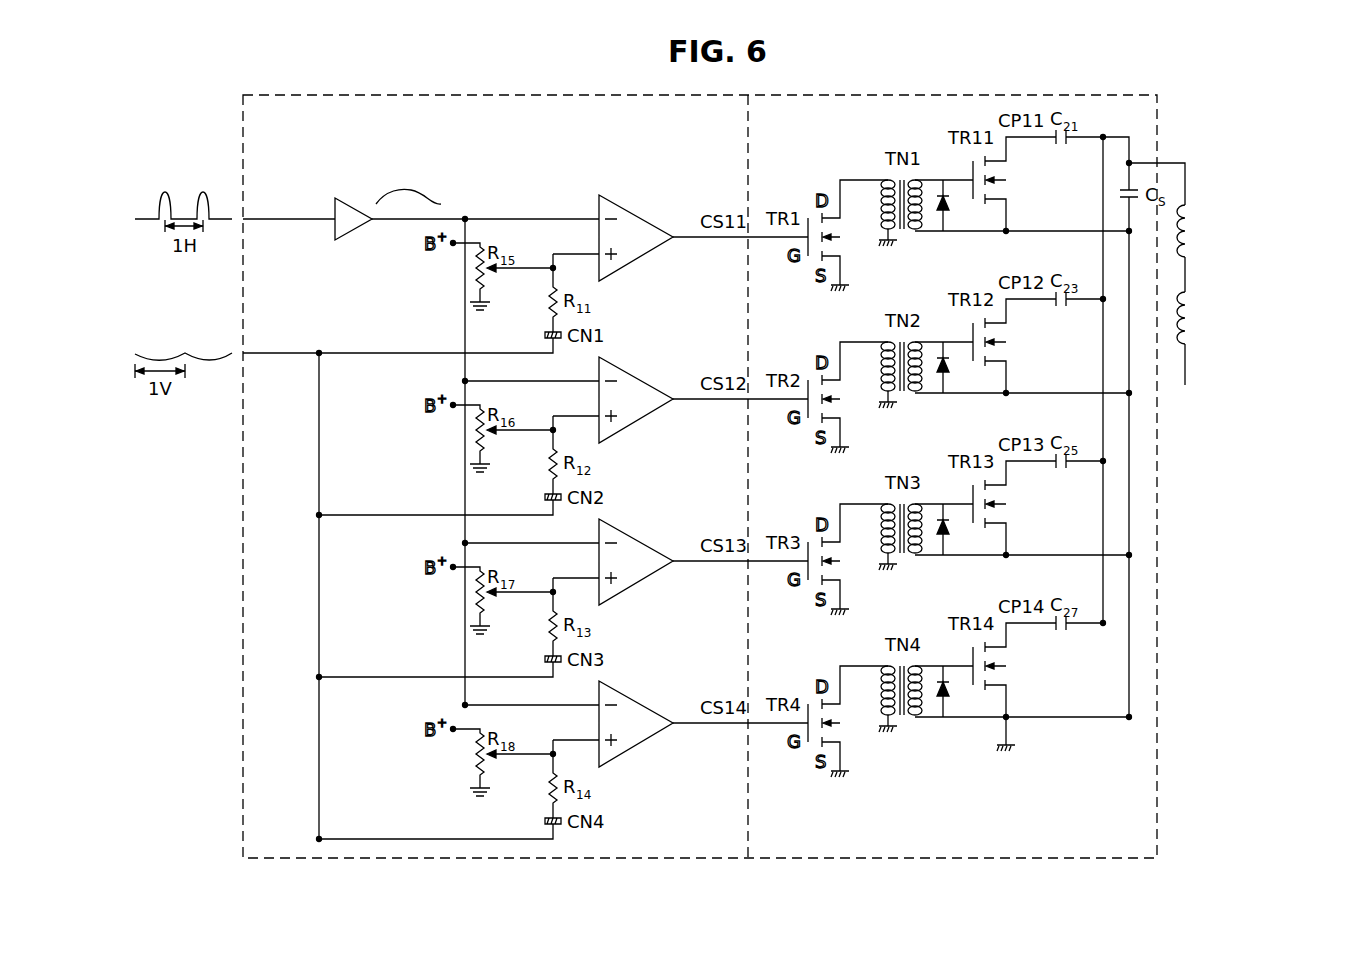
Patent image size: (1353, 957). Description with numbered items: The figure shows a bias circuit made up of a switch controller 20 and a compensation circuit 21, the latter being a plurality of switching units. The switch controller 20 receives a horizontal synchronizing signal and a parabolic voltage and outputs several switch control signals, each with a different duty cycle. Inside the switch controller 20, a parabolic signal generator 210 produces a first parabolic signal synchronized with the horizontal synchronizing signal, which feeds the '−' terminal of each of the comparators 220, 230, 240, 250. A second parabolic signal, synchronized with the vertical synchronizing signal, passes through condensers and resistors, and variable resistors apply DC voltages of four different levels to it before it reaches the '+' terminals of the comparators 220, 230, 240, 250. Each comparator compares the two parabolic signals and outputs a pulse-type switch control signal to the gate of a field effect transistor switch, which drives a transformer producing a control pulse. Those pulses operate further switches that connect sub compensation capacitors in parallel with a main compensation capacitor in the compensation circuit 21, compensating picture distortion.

The switch controller 20 is at (750, 152).
The compensation circuit 21 is at (1159, 132).
The parabolic signal generator 210 is at (360, 211).
The comparator 220 is at (703, 225).
The comparator 230 is at (703, 387).
The comparator 240 is at (703, 549).
The comparator 250 is at (703, 711).